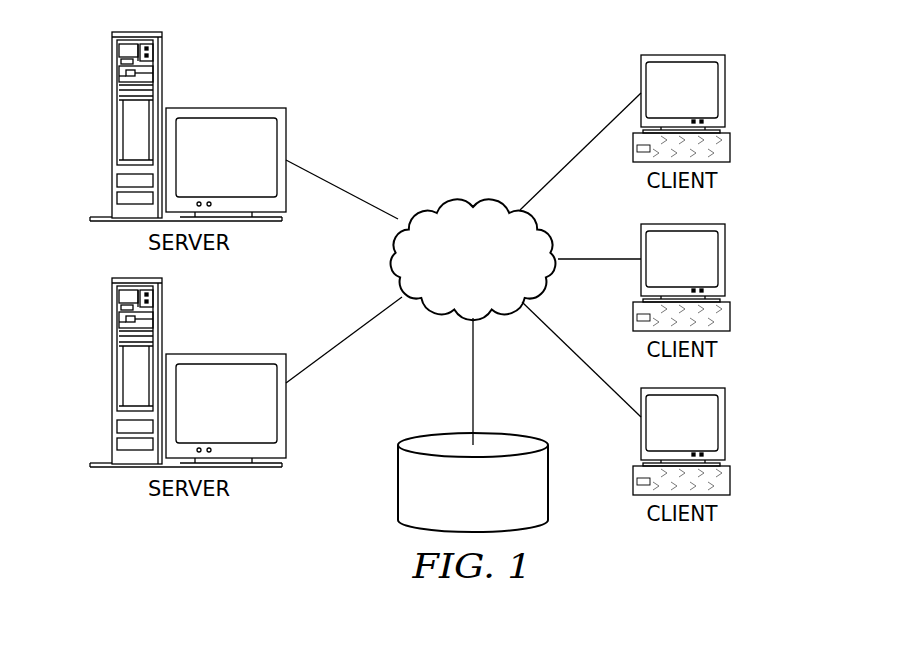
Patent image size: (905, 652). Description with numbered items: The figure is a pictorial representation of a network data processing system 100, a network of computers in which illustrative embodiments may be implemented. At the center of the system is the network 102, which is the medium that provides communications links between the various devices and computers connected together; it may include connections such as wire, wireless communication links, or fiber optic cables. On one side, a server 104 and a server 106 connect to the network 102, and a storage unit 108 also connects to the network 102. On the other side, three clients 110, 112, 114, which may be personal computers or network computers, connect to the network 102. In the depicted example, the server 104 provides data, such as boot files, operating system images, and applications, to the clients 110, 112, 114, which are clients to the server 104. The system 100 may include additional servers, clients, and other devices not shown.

The network data processing system 100 is at (336, 63).
The network 102 is at (440, 201).
The server 104 is at (112, 127).
The server 106 is at (112, 372).
The storage unit 108 is at (398, 482).
The client 110 is at (726, 92).
The client 112 is at (726, 268).
The client 114 is at (726, 423).